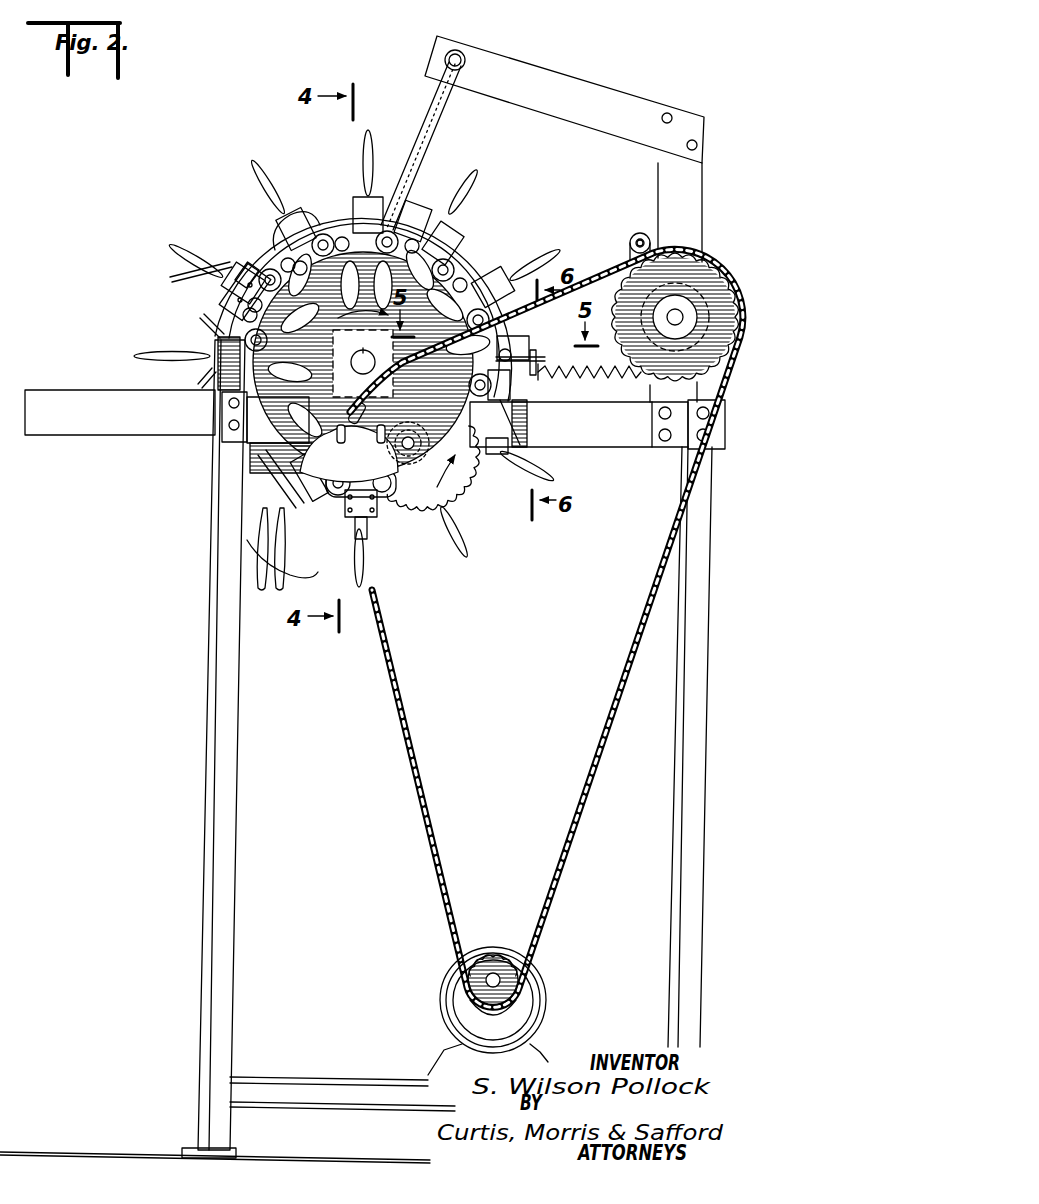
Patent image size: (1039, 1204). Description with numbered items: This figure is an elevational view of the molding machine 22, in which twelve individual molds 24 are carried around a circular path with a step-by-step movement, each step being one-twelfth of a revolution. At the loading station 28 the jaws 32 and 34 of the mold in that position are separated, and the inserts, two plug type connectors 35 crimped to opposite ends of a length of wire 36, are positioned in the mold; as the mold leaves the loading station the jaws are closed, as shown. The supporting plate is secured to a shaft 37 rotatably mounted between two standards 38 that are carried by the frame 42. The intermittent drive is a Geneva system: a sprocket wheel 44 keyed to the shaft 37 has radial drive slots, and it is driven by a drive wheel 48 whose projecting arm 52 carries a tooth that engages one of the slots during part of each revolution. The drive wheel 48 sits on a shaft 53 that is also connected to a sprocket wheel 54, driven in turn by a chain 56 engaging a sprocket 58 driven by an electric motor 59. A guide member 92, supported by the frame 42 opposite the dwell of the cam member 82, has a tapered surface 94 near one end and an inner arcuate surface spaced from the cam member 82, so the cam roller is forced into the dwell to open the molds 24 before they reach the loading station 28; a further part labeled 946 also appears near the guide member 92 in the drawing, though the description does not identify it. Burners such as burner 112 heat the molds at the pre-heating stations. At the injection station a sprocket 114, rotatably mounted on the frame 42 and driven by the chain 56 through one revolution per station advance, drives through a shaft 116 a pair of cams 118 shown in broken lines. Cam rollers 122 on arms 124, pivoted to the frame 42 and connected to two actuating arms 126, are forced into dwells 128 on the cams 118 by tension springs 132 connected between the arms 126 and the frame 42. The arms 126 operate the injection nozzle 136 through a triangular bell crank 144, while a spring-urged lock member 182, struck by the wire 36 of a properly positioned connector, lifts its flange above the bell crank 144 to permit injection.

The molding machine 22 is at (215, 203).
The molds 24 is at (226, 285).
The loading station 28 is at (132, 372).
The jaw 32 is at (205, 330).
The jaw 34 is at (205, 375).
The plug type connectors 35 is at (215, 357).
The wire 36 is at (262, 175).
The shaft 37 is at (350, 360).
The standards 38 is at (370, 359).
The frame 42 is at (203, 653).
The sprocket wheel 44 is at (360, 290).
The drive wheel 48 is at (349, 453).
The projecting arm 52 is at (433, 468).
The shaft 53 is at (418, 437).
The sprocket wheel 54 is at (458, 498).
The chain 56 is at (745, 362).
The sprocket 58 is at (492, 955).
The electric motor 59 is at (442, 995).
The cam member 82 is at (272, 250).
The guide member 92 is at (258, 452).
The tapered surface 94 is at (265, 417).
The link 946 is at (341, 412).
The burner 112 is at (296, 215).
The sprocket 114 is at (690, 275).
The shaft 116 is at (683, 318).
The cams 118 is at (685, 250).
The cam rollers 122 is at (612, 278).
The arms 124 is at (636, 250).
The actuating arms 126 is at (560, 352).
The dwells 128 is at (660, 348).
The tension springs 132 is at (589, 382).
The injection nozzle 136 is at (500, 423).
The bell crank 144 is at (597, 424).
The lock member 182 is at (530, 372).